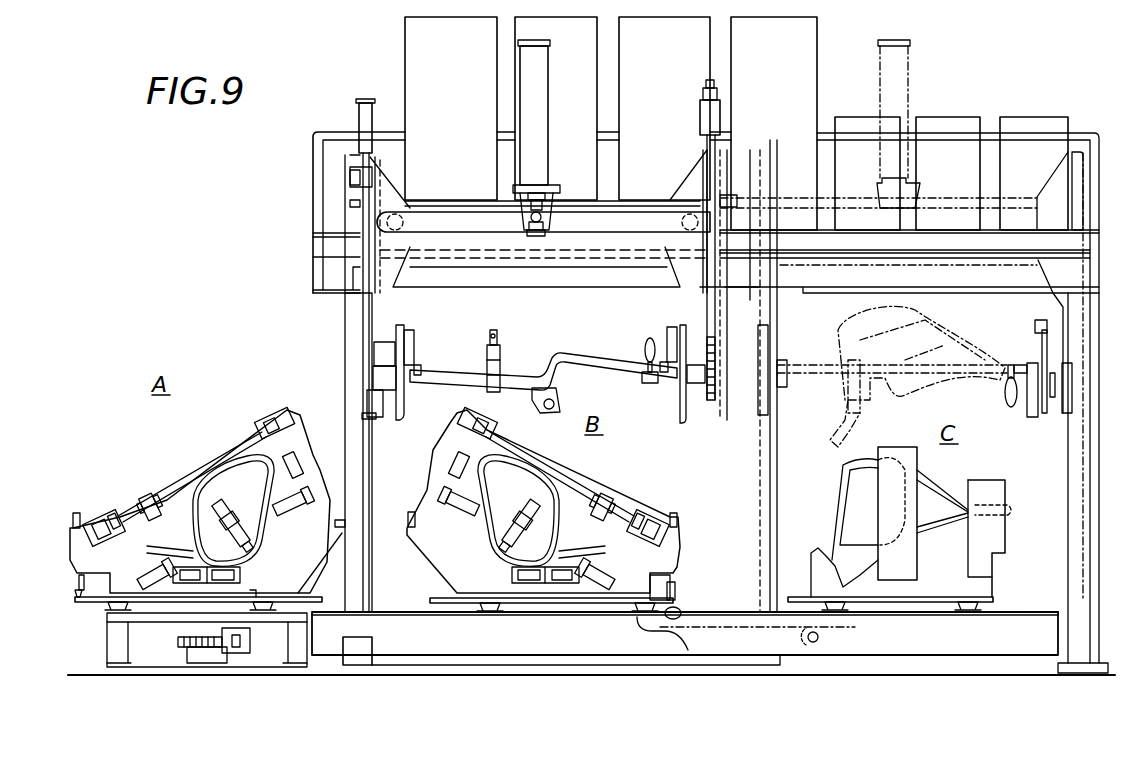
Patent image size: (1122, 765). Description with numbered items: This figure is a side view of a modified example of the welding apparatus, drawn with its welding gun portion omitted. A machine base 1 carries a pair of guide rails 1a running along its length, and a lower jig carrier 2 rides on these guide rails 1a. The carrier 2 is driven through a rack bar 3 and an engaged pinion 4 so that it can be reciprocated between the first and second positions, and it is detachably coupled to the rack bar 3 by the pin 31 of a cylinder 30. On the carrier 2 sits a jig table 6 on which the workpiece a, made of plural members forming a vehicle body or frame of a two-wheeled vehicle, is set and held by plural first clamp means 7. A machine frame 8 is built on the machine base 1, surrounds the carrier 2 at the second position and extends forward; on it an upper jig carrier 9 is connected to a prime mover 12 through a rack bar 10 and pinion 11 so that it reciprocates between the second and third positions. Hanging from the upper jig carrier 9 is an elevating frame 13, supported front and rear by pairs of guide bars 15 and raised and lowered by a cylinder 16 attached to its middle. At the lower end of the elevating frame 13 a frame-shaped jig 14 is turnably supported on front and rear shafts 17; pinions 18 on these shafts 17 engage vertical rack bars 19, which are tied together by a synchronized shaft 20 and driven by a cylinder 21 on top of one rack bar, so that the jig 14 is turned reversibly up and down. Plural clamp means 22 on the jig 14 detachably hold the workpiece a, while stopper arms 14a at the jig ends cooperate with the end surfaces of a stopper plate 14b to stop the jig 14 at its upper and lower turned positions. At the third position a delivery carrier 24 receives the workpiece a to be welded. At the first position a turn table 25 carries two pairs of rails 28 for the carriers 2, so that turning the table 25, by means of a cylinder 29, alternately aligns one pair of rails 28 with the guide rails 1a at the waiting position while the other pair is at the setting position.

The machine base 1 is at (483, 640).
The guide rails 1a is at (580, 614).
The lower jig carrier 2 is at (163, 607).
The rack bar 3 is at (657, 632).
The pinion 4 is at (813, 645).
The jig table 6 is at (75, 540).
The first clamp means 7 is at (150, 510).
The machine frame 8 is at (342, 436).
The upper jig carrier 9 is at (445, 212).
The rack bar 10 is at (472, 201).
The pinion 11 is at (728, 192).
The prime mover 12 is at (708, 112).
The elevating frame 13 is at (640, 240).
The jig 14 is at (563, 355).
The stopper arms 14a is at (400, 420).
The stopper plate 14b is at (405, 328).
The guide bars 15 is at (362, 225).
The cylinder 16 is at (548, 93).
The shafts 17 is at (370, 388).
The pinions 18 is at (373, 372).
The rack bars 19 is at (372, 347).
The synchronized shaft 20 is at (604, 258).
The cylinder 21 is at (363, 98).
The clamp means 22 is at (490, 331).
The delivery carrier 24 is at (996, 572).
The turn table 25 is at (142, 622).
The rails 28 is at (280, 617).
The cylinder 29 is at (237, 653).
The cylinder 30 is at (675, 587).
The pin 31 is at (681, 610).
The workpiece a is at (225, 478).